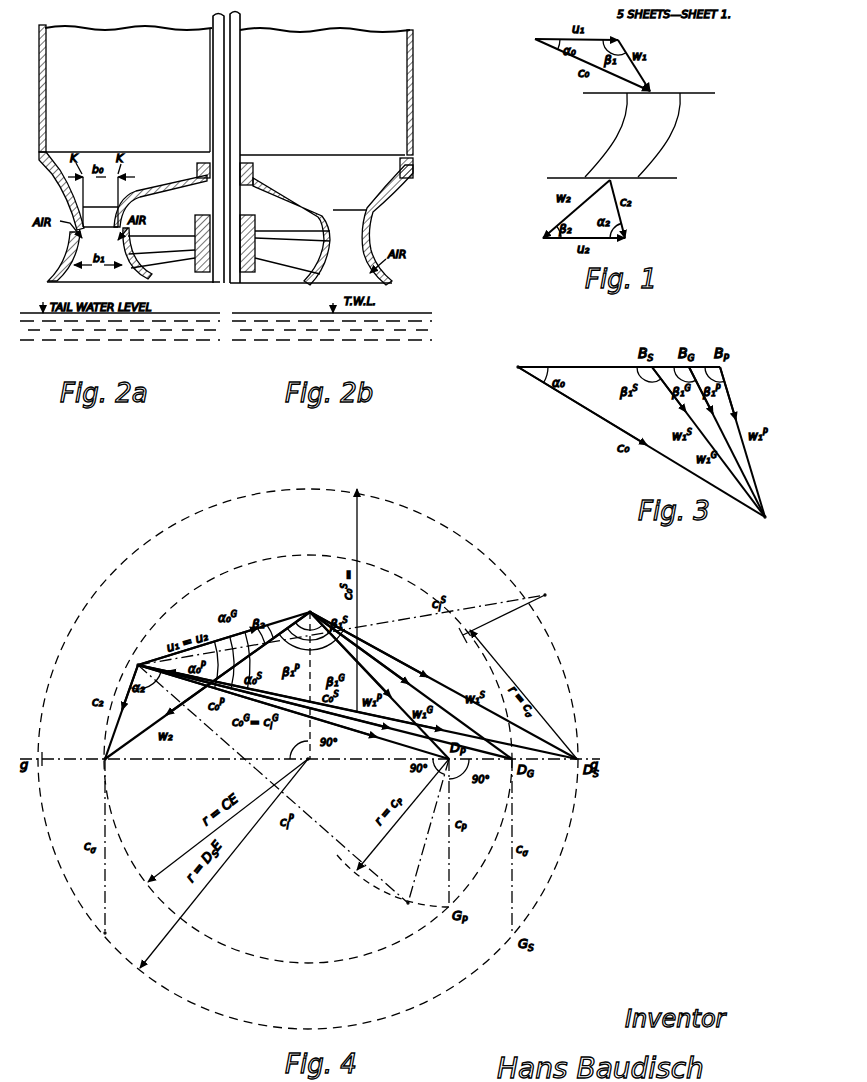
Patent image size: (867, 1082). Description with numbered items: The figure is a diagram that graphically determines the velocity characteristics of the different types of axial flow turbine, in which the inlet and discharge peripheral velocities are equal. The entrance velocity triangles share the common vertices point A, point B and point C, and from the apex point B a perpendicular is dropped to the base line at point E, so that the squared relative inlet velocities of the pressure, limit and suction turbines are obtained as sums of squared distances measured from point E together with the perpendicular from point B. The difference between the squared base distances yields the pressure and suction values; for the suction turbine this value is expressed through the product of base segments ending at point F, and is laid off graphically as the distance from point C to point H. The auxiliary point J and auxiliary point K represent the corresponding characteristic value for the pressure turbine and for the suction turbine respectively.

In FIG. 3, the point A is at (510, 359).
In FIG. 4, the point A is at (123, 655).
In FIG. 4, the point B is at (317, 602).
In FIG. 3, the point C is at (773, 520).
In FIG. 4, the point C is at (97, 751).
In FIG. 4, the point E is at (313, 770).
In FIG. 4, the point F is at (42, 750).
In FIG. 4, the point H is at (98, 941).
In FIG. 4, the auxiliary point J is at (403, 913).
In FIG. 4, the auxiliary point K is at (553, 593).